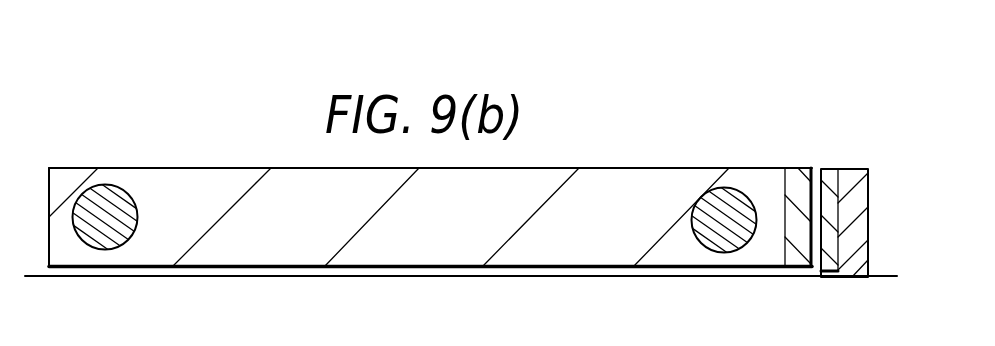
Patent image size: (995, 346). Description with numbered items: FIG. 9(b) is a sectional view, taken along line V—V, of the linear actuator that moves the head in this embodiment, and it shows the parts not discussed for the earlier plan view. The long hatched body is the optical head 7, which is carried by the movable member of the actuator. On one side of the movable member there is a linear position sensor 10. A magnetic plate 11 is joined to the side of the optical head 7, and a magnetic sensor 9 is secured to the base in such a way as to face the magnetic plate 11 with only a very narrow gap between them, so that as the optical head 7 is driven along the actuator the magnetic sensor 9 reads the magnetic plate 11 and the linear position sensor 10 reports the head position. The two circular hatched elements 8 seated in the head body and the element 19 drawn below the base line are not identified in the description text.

The optical head 7 is at (369, 254).
The O-ring 8 is at (103, 240).
The magnetic sensor 9 is at (848, 169).
The linear position sensor 10 is at (822, 262).
The magnetic plate 11 is at (797, 182).
The base 19 is at (461, 310).